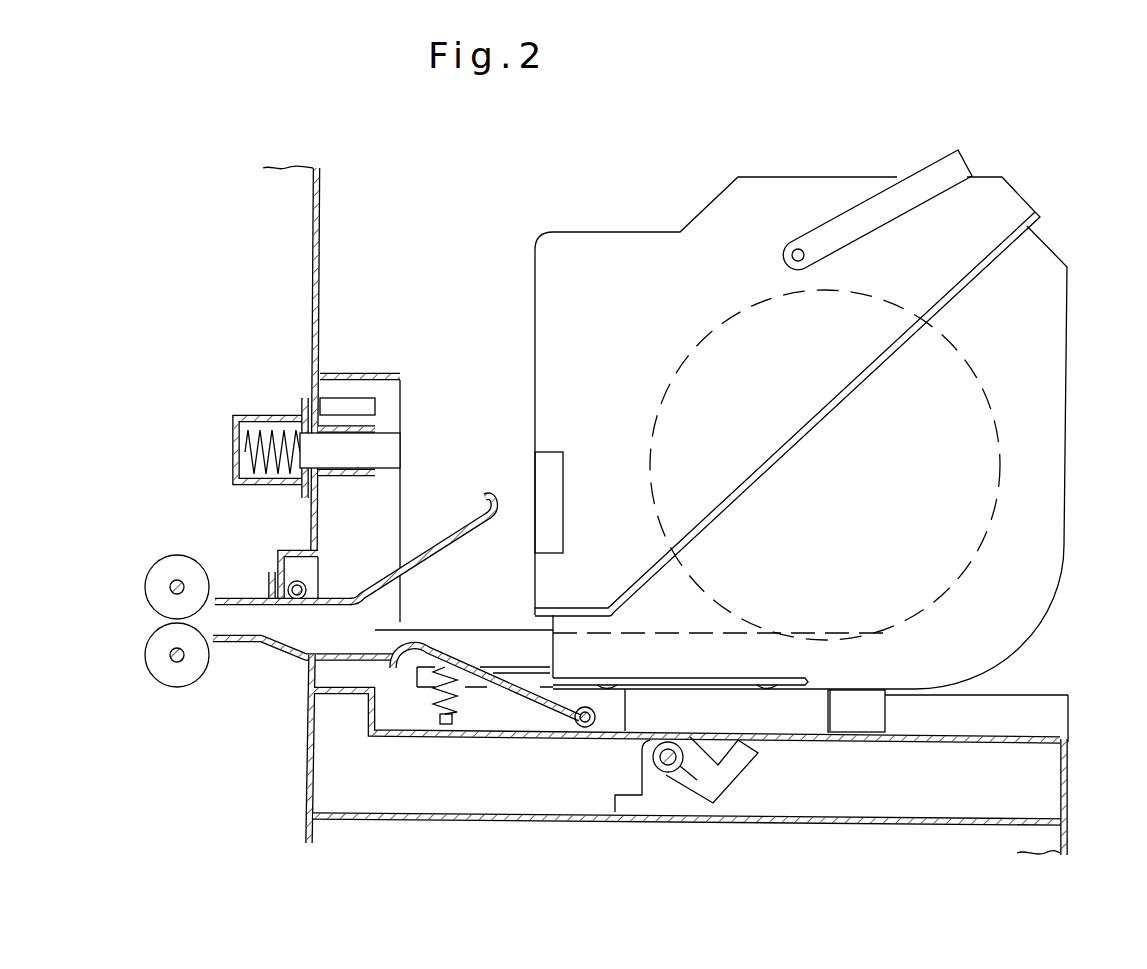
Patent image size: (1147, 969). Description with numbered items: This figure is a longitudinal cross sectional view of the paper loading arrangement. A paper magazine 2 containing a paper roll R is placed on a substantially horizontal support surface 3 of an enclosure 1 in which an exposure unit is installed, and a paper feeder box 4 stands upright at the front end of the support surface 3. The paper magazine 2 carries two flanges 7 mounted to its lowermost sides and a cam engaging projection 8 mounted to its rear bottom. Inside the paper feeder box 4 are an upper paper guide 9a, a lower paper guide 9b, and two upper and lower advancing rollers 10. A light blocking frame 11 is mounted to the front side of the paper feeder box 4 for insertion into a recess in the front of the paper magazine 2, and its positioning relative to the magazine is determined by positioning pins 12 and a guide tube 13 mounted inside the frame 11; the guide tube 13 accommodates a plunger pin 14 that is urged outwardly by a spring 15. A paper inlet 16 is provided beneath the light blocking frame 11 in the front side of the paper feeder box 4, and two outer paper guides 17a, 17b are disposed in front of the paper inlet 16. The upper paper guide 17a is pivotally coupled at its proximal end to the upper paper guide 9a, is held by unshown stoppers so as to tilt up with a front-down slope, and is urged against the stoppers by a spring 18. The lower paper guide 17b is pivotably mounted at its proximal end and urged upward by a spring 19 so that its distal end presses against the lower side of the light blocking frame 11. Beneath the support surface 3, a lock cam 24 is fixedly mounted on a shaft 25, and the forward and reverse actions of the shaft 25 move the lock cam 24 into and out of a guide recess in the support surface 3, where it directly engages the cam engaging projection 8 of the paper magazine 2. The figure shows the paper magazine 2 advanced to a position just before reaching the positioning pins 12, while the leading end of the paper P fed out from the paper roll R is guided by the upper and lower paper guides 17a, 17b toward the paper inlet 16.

The enclosure 1 is at (1068, 777).
The paper magazine 2 is at (592, 230).
The support surface 3 is at (1014, 695).
The paper feeder box 4 is at (322, 212).
The flanges 7 is at (748, 686).
The cam engaging projection 8 is at (856, 718).
The upper paper guide 9a is at (218, 596).
The lower paper guide 9b is at (233, 643).
The advancing rollers 10 is at (159, 642).
The light blocking frame 11 is at (362, 373).
The positioning pins 12 is at (347, 402).
The guide tube 13 is at (370, 422).
The plunger pin 14 is at (390, 450).
The spring 15 is at (234, 452).
The paper inlet 16 is at (306, 628).
The upper paper guide 17a is at (457, 537).
The lower paper guide 17b is at (470, 658).
The spring 18 is at (283, 570).
The spring 19 is at (434, 711).
The lock cam 24 is at (738, 780).
The shaft 25 is at (668, 772).
The paper P is at (433, 630).
The paper roll R is at (985, 394).